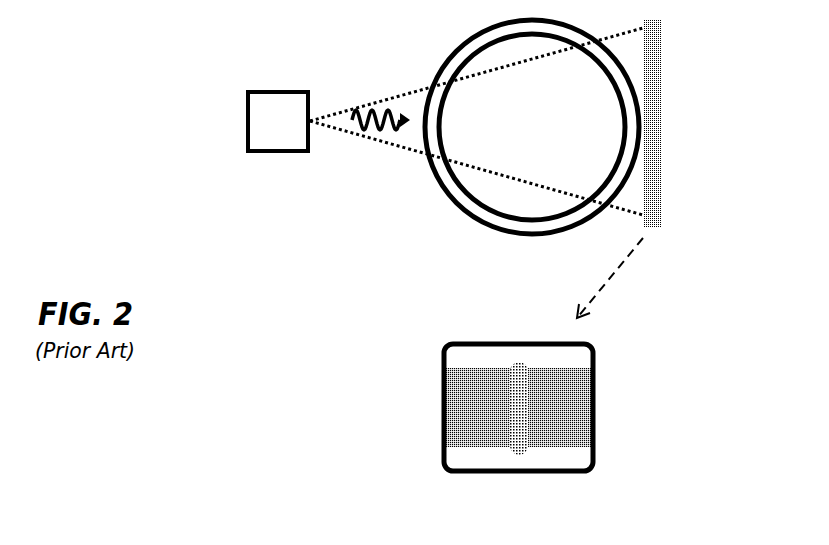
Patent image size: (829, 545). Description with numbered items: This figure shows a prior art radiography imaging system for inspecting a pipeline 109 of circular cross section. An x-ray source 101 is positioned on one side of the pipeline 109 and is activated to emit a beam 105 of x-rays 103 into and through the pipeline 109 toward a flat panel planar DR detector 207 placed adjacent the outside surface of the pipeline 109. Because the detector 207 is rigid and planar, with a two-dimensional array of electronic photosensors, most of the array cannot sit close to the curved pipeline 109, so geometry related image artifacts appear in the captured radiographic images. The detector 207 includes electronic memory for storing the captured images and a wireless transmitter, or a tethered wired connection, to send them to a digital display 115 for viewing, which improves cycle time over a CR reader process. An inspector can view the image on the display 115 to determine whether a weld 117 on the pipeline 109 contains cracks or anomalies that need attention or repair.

The x-ray source 101 is at (246, 115).
The x-rays 103 is at (380, 110).
The beam 105 is at (368, 135).
The pipeline 109 is at (470, 213).
The flat panel planar DR detector 207 is at (661, 60).
The digital display 115 is at (442, 352).
The weld 117 is at (520, 438).